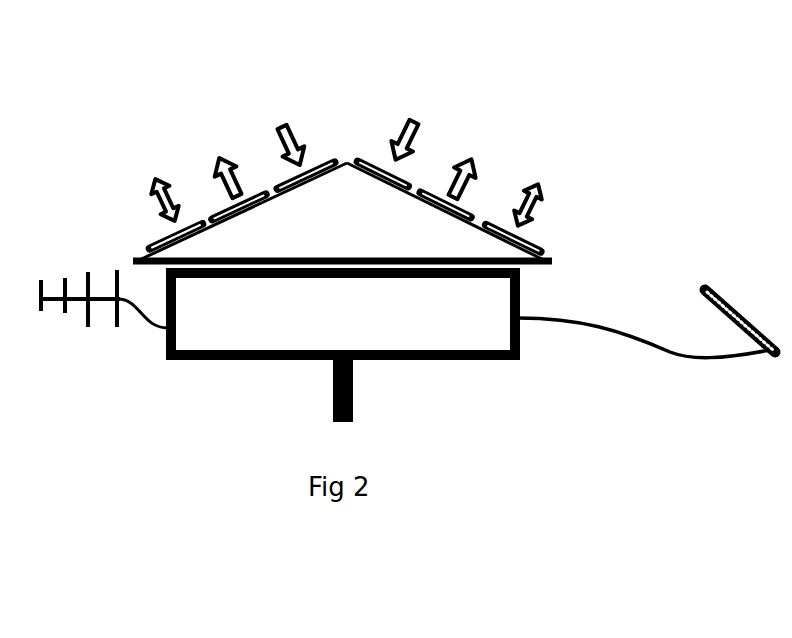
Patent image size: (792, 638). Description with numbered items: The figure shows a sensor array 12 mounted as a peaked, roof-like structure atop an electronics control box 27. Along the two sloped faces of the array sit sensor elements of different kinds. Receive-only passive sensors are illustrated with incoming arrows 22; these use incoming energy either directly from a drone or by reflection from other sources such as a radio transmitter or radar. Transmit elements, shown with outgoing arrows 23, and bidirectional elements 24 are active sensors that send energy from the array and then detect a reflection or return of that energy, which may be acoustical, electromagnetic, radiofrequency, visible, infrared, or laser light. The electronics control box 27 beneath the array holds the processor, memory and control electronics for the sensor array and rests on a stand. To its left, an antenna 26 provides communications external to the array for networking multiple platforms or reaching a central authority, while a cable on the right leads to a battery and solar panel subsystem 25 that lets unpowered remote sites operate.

The solar-powered device assembly 12 is at (42, 82).
The incoming arrows 22 is at (448, 106).
The transmit elements 23 is at (508, 135).
The bidirectional elements 24 is at (563, 174).
The battery and solar panel subsystem 25 is at (740, 268).
The antenna 26 is at (95, 222).
The electronics control box 27 is at (275, 338).